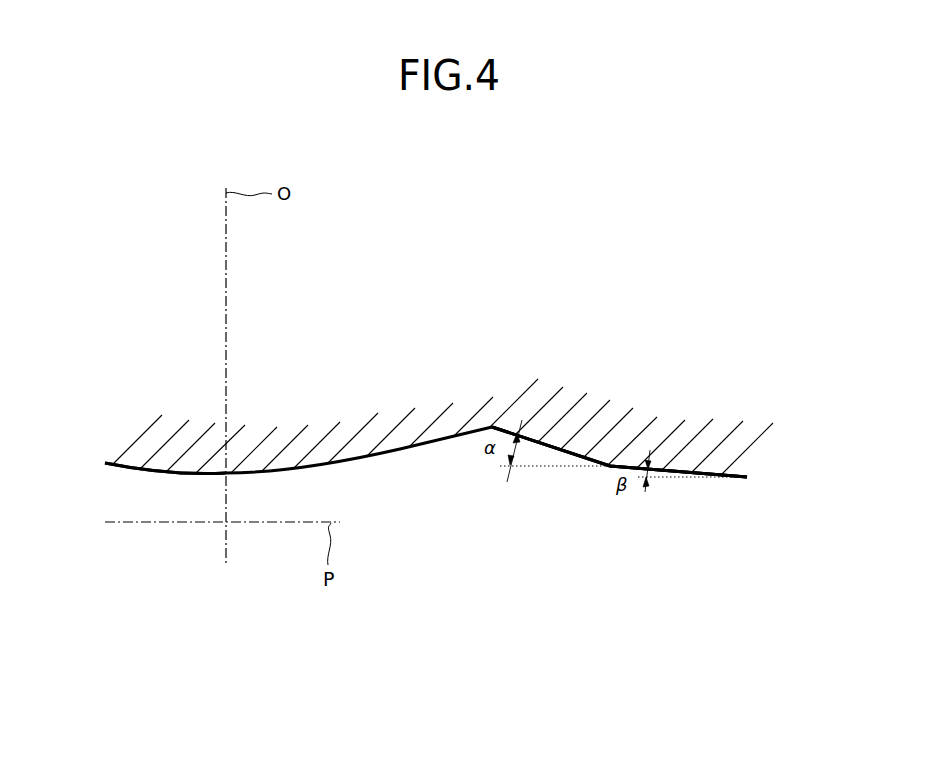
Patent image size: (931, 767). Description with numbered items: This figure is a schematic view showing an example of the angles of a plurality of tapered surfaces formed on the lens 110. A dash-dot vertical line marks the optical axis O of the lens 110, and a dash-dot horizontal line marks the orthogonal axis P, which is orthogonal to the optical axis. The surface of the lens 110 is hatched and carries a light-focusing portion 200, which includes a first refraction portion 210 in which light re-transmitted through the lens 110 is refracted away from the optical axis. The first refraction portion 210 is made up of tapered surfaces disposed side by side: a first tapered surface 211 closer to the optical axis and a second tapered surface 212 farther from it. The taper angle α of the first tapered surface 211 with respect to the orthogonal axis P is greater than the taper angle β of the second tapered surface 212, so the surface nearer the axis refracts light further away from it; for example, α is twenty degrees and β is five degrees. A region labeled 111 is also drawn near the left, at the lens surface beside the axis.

The lens 110 is at (427, 418).
The recessed portion of outer peripheral surface 111 is at (128, 465).
The light-focusing portion 200 is at (480, 475).
The first refraction portion 210 is at (635, 497).
The first tapered surface 211 is at (570, 455).
The second tapered surface 212 is at (705, 480).